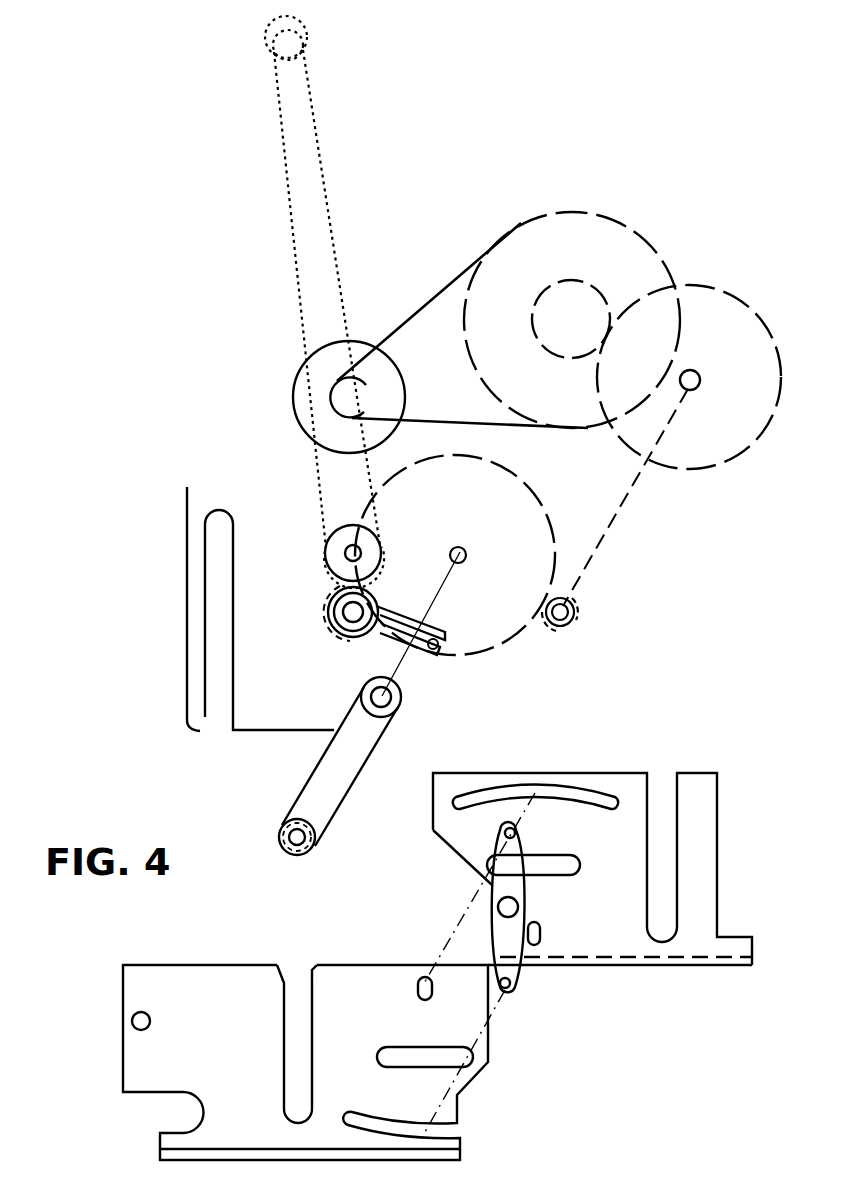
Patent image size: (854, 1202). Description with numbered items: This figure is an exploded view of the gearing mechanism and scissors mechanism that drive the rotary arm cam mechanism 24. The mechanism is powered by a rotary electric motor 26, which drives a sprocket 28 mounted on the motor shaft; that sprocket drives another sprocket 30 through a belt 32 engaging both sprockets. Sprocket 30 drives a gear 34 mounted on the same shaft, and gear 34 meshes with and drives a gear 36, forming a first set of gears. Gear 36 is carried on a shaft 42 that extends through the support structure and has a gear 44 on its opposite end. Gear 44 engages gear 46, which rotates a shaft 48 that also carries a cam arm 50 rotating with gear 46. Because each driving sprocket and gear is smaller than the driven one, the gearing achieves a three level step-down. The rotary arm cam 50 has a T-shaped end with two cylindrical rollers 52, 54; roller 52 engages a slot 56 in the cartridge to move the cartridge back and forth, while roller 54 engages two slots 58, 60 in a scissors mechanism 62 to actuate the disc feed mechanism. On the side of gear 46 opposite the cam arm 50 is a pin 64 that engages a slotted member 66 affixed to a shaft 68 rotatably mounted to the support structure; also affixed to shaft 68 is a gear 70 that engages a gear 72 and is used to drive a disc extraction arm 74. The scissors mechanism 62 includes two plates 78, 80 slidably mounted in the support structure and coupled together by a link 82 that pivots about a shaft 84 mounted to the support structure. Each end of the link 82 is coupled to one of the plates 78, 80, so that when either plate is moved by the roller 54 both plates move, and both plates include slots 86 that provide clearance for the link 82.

The rotary arm cam mechanism 24 is at (486, 200).
The rotary electric motor 26 is at (293, 397).
The sprocket 28 is at (366, 385).
The sprocket 30 is at (470, 354).
The belt 32 is at (436, 290).
The gear 34 is at (580, 281).
The gear 36 is at (746, 300).
The shaft 42 is at (613, 521).
The gear 44 is at (576, 617).
The gear 46 is at (517, 638).
The shaft 48 is at (462, 548).
The cam arm 50 is at (384, 742).
The roller 52 is at (316, 843).
The roller 54 is at (316, 843).
The slot 56 is at (205, 717).
The slot 58 is at (290, 986).
The slot 60 is at (647, 807).
The scissors mechanism 62 is at (522, 1060).
The pin 64 is at (450, 652).
The slotted member 66 is at (430, 625).
The shaft 68 is at (342, 638).
The gear 70 is at (328, 606).
The gear 72 is at (326, 556).
The disc extraction arm 74 is at (320, 480).
The plate 78 is at (123, 1053).
The plate 80 is at (613, 967).
The link 82 is at (528, 898).
The shaft 84 is at (497, 912).
The slots 86 is at (577, 793).